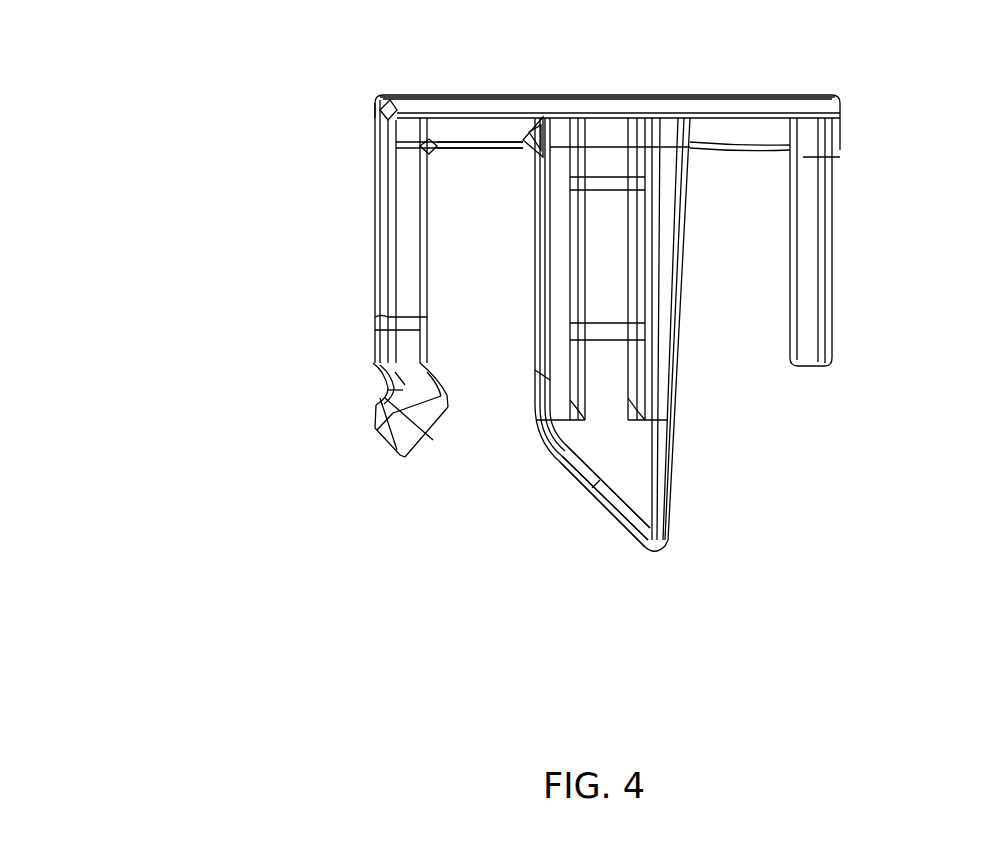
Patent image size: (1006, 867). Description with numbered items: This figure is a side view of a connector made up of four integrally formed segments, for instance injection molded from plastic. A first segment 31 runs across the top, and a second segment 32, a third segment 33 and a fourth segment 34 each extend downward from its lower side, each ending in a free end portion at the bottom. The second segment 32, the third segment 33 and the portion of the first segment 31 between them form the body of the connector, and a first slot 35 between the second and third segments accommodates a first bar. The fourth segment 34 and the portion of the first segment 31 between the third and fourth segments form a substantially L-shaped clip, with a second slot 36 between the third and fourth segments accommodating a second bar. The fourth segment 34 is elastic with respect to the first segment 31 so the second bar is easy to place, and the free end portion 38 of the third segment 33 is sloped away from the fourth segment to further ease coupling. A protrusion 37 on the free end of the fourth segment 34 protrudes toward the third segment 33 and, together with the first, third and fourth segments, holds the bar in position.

The first segment 31 is at (478, 113).
The second segment 32 is at (818, 200).
The third segment 33 is at (650, 421).
The fourth segment 34 is at (397, 220).
The first slot 35 is at (740, 206).
The second slot 36 is at (475, 280).
The protrusion 37 is at (432, 400).
The free end portion 38 is at (598, 495).